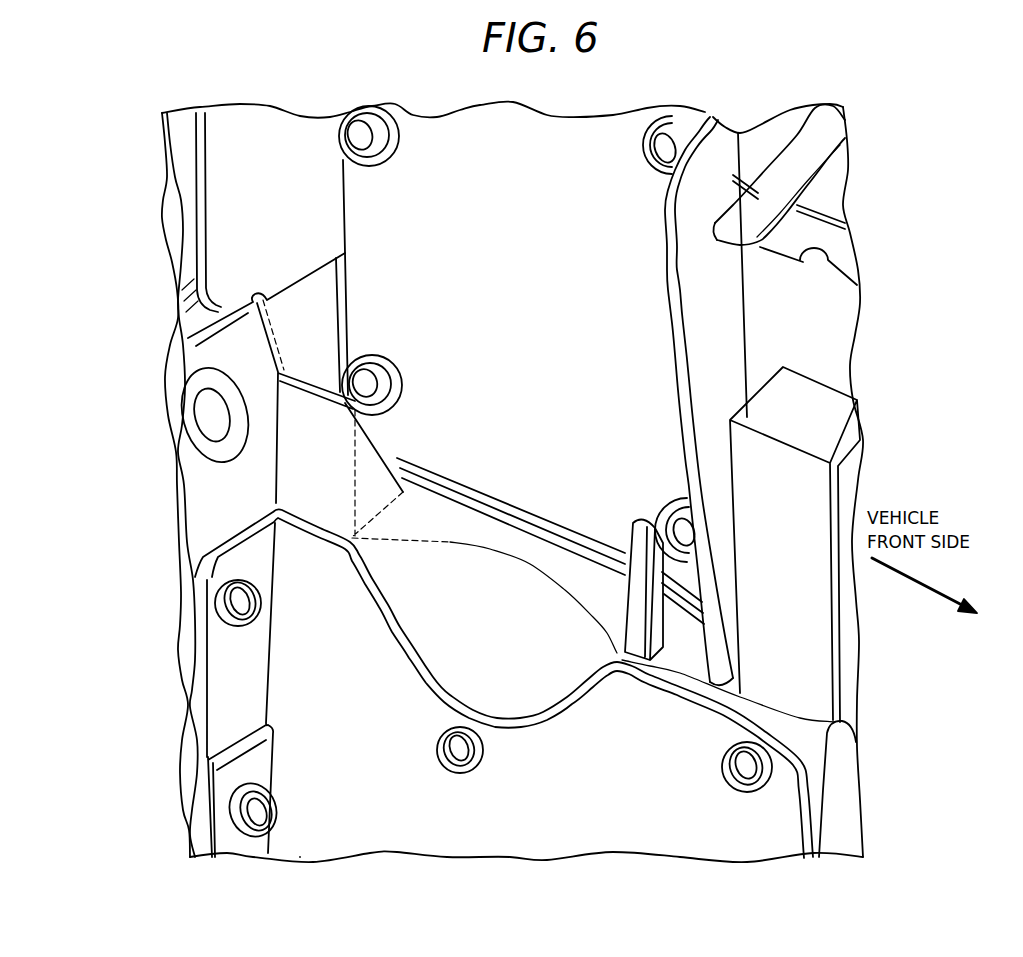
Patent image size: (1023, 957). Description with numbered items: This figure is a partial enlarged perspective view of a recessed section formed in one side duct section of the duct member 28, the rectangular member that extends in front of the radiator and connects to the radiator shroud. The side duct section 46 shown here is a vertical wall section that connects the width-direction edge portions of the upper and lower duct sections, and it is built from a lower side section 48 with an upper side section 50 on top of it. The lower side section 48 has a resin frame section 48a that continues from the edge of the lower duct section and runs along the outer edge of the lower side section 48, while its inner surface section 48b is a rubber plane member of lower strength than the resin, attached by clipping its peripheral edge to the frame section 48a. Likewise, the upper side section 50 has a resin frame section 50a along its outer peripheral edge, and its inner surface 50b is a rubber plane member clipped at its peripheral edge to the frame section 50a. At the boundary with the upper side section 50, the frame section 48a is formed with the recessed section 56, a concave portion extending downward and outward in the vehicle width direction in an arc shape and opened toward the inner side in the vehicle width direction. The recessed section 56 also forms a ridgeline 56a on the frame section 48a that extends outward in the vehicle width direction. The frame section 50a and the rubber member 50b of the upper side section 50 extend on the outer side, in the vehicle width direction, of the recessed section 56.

The duct member 28 is at (577, 108).
The side duct section 46 is at (752, 297).
The lower side section 48 is at (549, 776).
The frame section 48a is at (417, 520).
The inner surface section 48b is at (403, 797).
The upper side section 50 is at (446, 150).
The frame section 50a is at (282, 157).
The inner surface 50b is at (484, 157).
The recessed section 56 is at (473, 590).
The ridgeline 56a is at (533, 560).